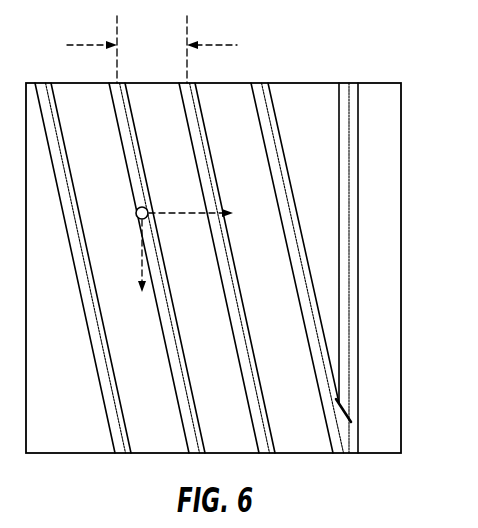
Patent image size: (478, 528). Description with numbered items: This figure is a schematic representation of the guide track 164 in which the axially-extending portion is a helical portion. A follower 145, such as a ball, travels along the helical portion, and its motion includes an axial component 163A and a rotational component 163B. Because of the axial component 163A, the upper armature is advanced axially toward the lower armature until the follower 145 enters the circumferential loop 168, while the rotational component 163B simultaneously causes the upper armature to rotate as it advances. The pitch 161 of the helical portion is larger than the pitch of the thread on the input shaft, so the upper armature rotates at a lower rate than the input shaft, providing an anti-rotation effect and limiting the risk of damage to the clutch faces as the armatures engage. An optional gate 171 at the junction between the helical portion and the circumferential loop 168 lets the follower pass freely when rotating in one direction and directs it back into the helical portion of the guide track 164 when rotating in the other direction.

The follower 145 is at (135, 212).
The pitch 161 is at (87, 44).
The axial component 163A is at (185, 212).
The rotational component 163B is at (138, 274).
The guide track 164 is at (289, 55).
The circumferential loop 168 is at (343, 440).
The gate 171 is at (347, 408).